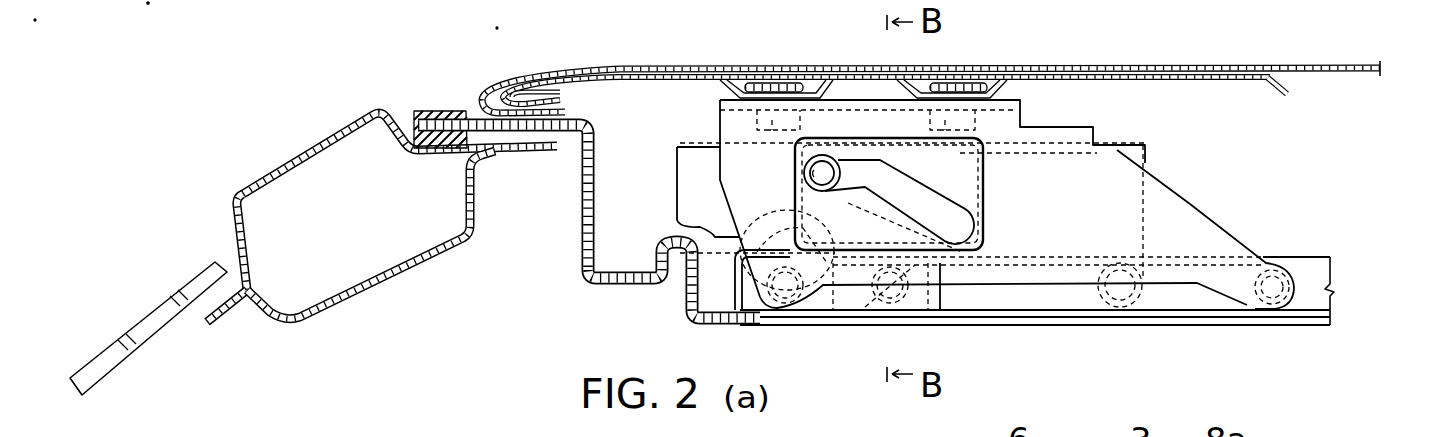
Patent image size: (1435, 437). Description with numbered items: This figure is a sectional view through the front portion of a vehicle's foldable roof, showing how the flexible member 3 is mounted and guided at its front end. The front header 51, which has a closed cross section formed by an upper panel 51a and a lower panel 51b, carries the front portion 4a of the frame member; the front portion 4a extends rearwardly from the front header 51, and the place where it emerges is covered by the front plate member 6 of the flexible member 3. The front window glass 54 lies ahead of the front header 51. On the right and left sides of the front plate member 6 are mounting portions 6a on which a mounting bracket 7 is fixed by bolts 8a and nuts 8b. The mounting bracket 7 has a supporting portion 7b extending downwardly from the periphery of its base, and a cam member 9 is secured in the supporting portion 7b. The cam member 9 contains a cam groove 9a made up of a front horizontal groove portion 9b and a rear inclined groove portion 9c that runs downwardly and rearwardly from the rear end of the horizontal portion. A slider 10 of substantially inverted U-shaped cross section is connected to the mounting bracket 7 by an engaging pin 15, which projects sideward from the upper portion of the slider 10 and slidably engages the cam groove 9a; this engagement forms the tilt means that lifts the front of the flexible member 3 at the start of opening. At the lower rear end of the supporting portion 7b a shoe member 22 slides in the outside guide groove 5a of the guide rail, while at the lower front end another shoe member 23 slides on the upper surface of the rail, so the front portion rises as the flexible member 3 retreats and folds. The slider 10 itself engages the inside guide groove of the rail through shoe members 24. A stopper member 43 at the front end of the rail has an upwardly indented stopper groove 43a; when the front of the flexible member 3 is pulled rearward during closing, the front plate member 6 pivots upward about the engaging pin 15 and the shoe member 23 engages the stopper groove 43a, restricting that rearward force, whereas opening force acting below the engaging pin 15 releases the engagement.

The flexible member 3 is at (1206, 63).
The front portion of the frame member 4a is at (582, 114).
The outside guide groove 5a is at (1325, 288).
The front plate member 6 is at (1084, 64).
The mounting portions 6a is at (734, 78).
The mounting bracket 7 is at (1150, 172).
The supporting portion 7b is at (1195, 202).
The bolts 8a is at (790, 78).
The nuts 8b is at (723, 110).
The cam member 9 is at (984, 178).
The cam groove 9a is at (846, 192).
The front horizontal groove portion 9b is at (805, 170).
The rear inclined groove portion 9c is at (986, 224).
The slider 10 is at (678, 168).
The engaging pin 15 is at (836, 169).
The shoe member 22 is at (1248, 258).
The shoe member 23 is at (700, 301).
The shoe members 24 is at (923, 292).
The stopper member 43 is at (794, 312).
The stopper groove 43a is at (765, 295).
The front header 51 is at (426, 256).
The upper panel 51a is at (342, 122).
The lower panel 51b is at (464, 238).
The front window glass 54 is at (120, 363).